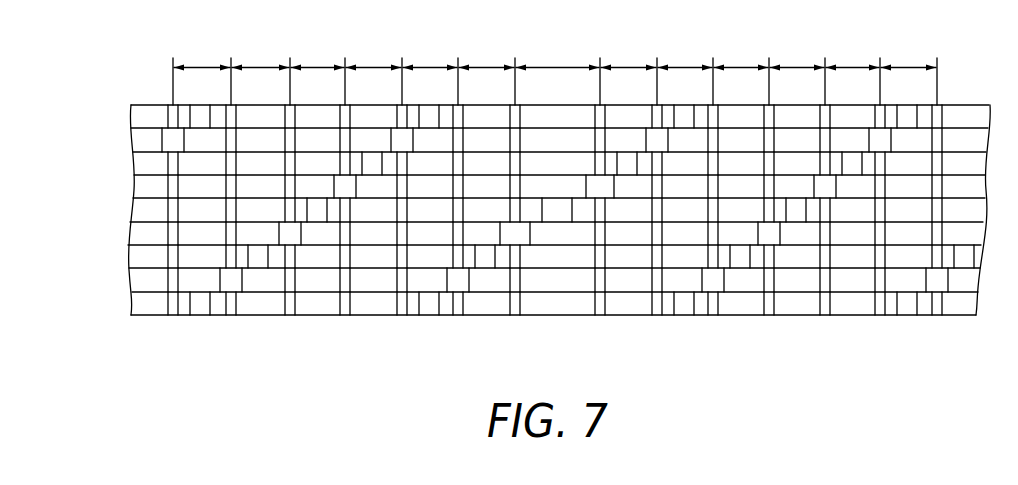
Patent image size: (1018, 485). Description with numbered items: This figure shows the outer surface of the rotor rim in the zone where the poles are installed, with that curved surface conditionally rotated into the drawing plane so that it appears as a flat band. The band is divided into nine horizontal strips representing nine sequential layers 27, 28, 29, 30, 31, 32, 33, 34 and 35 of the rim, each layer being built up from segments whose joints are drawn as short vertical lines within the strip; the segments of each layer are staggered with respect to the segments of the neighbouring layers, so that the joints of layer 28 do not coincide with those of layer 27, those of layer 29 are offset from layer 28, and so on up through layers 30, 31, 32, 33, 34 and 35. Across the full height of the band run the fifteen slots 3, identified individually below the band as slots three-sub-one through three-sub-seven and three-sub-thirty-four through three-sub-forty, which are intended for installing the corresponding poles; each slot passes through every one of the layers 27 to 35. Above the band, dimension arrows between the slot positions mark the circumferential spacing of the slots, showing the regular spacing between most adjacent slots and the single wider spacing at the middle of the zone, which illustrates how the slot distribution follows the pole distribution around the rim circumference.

The slots 3 is at (934, 337).
The layer 27 is at (127, 303).
The layer 28 is at (127, 281).
The layer 29 is at (127, 258).
The layer 30 is at (127, 233).
The layer 31 is at (127, 210).
The layer 32 is at (127, 187).
The layer 33 is at (127, 163).
The layer 34 is at (127, 140).
The layer 35 is at (127, 118).